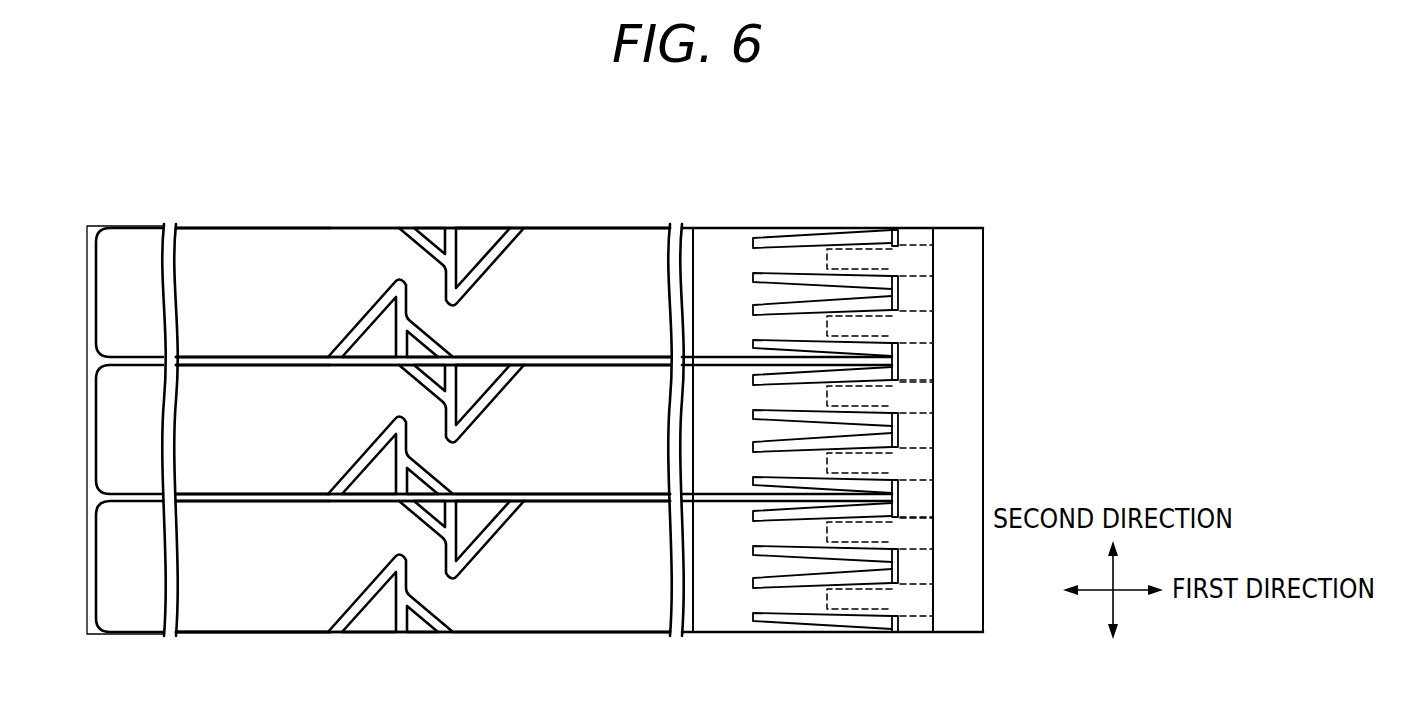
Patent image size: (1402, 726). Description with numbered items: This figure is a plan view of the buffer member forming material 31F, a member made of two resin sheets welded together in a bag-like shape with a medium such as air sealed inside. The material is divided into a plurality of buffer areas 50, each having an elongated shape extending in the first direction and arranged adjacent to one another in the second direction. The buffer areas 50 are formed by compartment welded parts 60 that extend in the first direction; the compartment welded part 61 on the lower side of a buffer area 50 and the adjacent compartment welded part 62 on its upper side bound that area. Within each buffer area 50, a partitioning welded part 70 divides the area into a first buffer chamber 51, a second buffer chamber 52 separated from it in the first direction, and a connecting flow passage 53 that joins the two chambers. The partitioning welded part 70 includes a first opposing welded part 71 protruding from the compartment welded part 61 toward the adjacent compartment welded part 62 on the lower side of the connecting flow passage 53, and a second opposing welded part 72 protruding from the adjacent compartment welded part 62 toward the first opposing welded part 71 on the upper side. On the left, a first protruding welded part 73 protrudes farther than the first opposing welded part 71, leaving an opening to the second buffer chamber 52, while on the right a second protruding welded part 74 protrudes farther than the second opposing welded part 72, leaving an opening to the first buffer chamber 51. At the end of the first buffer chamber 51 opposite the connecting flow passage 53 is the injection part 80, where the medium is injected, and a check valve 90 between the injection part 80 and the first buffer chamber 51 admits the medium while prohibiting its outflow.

The buffer area 50 is at (90, 301).
The first buffer chamber 51 is at (585, 270).
The second buffer chamber 52 is at (203, 280).
The connecting flow passage 53 is at (428, 290).
The compartment welded part 60 is at (204, 634).
The compartment welded part 61 is at (268, 356).
The adjacent compartment welded part 62 is at (317, 226).
The partitioning welded part 70 is at (490, 178).
The first opposing welded part 71 is at (423, 320).
The second opposing welded part 72 is at (435, 240).
The first protruding welded part 73 is at (378, 338).
The second protruding welded part 74 is at (462, 248).
The buffer member forming material 31F is at (721, 174).
The injection part 80 is at (951, 211).
The check valve 90 is at (821, 210).